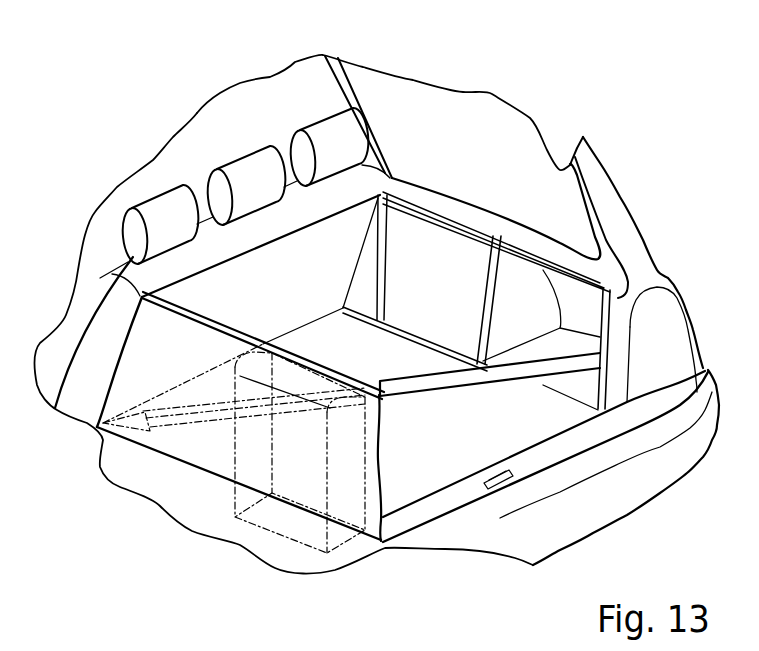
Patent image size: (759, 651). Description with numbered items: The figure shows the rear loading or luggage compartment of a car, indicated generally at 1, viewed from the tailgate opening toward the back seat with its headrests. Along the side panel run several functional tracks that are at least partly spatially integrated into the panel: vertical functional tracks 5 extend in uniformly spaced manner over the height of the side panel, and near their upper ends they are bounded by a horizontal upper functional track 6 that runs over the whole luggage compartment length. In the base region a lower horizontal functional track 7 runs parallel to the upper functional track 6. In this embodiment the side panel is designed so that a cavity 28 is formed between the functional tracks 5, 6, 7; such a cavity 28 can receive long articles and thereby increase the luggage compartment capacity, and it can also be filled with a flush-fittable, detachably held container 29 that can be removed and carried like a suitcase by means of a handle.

The vehicle rear / seat back area 1 is at (249, 133).
The vertical functional track 5 is at (485, 290).
The upper functional track 6 is at (480, 230).
The lower functional track 7 is at (430, 343).
The cavity 28 is at (527, 310).
The container 29 is at (557, 368).